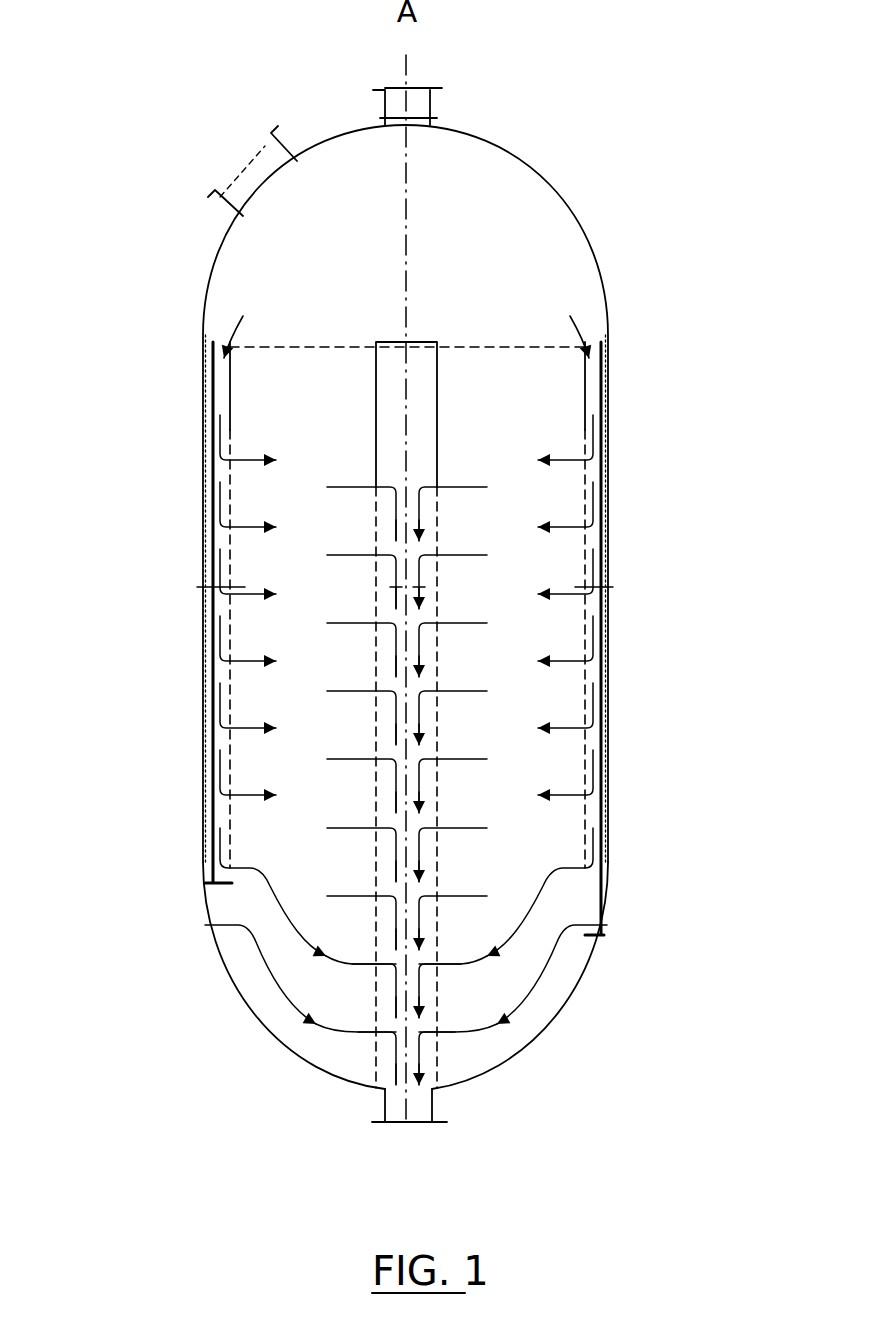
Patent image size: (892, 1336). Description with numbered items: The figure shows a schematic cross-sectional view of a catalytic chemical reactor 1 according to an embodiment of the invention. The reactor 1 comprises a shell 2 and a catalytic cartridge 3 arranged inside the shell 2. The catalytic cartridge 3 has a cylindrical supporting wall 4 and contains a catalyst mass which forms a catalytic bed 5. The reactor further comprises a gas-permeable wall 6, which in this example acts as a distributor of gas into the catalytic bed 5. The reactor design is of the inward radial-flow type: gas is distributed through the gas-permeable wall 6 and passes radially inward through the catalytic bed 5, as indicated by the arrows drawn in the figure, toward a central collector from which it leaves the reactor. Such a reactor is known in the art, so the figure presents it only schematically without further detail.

The catalytic chemical reactor 1 is at (626, 218).
The shell 2 is at (611, 410).
The catalytic cartridge 3 is at (257, 412).
The cylindrical supporting wall 4 is at (602, 540).
The catalytic bed 5 is at (460, 380).
The gas-permeable wall 6 is at (586, 620).